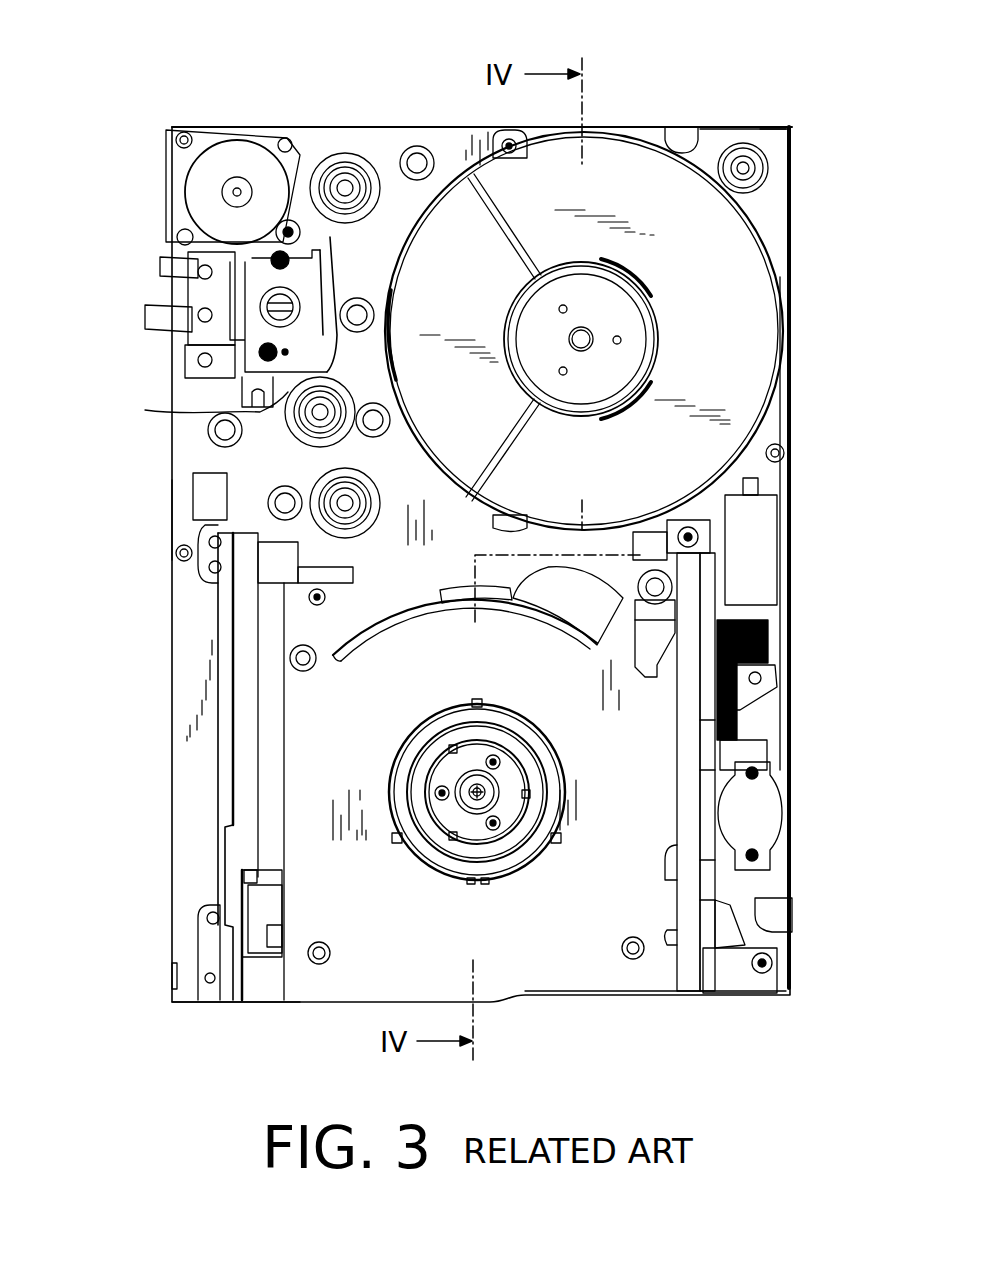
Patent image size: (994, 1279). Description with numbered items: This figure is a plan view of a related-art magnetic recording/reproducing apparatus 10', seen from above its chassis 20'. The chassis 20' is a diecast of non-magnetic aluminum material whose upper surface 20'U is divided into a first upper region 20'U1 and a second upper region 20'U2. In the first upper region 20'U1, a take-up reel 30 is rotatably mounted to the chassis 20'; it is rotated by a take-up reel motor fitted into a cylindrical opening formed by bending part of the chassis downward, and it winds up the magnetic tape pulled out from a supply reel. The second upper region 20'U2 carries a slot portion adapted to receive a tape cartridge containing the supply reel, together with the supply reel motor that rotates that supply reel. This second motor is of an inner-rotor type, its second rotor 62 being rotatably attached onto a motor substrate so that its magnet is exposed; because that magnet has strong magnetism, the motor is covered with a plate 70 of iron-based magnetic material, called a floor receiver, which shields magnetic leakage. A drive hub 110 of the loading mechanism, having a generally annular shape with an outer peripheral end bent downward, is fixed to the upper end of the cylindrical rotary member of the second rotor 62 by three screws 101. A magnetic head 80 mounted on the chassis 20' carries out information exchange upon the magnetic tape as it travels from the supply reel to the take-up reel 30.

The magnetic recording/reproducing apparatus 10' is at (181, 1050).
The chassis 20' is at (479, 520).
The upper surface 20'U is at (473, 344).
The first upper region 20'U1 is at (752, 79).
The second upper region 20'U2 is at (193, 762).
The take-up reel 30 is at (763, 353).
The second rotor 62 is at (490, 797).
The plate 70 is at (660, 980).
The magnetic head 80 is at (255, 397).
The screws 101 is at (498, 755).
The drive hub 110 is at (510, 778).